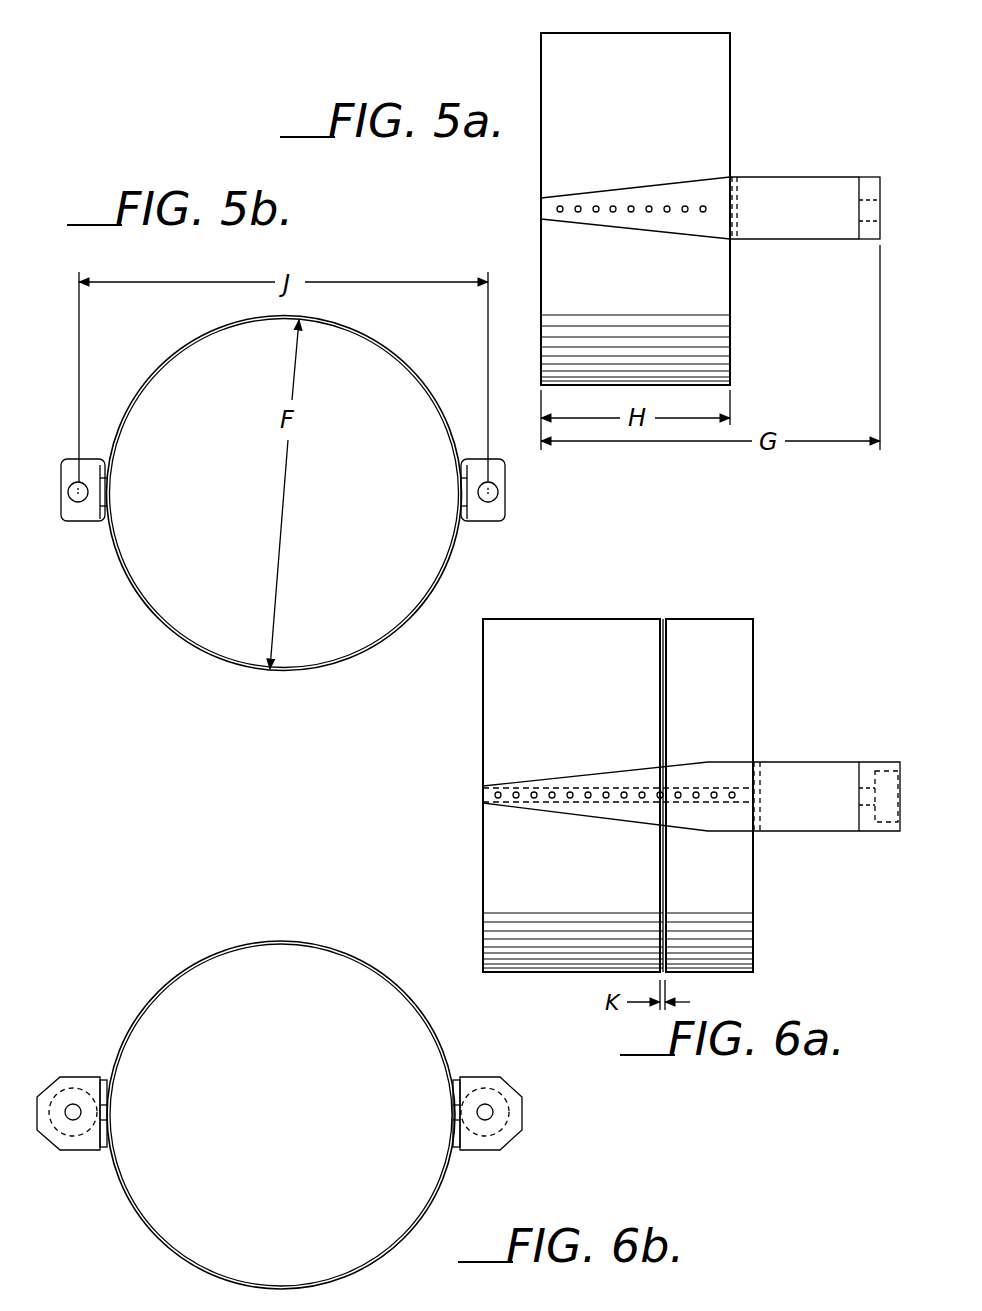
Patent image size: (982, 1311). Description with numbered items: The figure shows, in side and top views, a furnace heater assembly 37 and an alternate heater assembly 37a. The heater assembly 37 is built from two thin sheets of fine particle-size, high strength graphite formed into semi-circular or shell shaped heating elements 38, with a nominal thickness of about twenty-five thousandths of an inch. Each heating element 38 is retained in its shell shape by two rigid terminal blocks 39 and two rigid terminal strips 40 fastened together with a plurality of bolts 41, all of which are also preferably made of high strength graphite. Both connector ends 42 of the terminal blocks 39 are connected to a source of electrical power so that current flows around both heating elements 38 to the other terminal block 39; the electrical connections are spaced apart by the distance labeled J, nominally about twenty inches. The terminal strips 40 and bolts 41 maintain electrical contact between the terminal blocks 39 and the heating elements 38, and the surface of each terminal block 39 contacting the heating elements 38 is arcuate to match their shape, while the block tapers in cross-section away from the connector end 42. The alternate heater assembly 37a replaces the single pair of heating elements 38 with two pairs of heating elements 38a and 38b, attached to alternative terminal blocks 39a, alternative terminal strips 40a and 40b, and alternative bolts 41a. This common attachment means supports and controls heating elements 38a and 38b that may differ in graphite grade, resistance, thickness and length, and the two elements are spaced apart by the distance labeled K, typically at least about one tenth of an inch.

In FIG. 5A, the furnace heater assembly 37 is at (785, 115).
In FIG. 5A, the heating elements 38 is at (546, 72).
In FIG. 5B, the heating elements 38 is at (375, 338).
In FIG. 5A, the terminal blocks 39 is at (670, 184).
In FIG. 5B, the terminal blocks 39 is at (88, 522).
In FIG. 5B, the terminal strips 40 is at (112, 479).
In FIG. 5A, the bolts 41 is at (596, 206).
In FIG. 5A, the connector ends 42 is at (880, 186).
In FIG. 6A, the alternate heater assembly 37a is at (780, 622).
In FIG. 6A, the heating elements 38a is at (753, 676).
In FIG. 6A, the heating elements 38b is at (484, 737).
In FIG. 6B, the heating elements 38b is at (188, 966).
In FIG. 6A, the alternative terminal blocks 39a is at (808, 762).
In FIG. 6B, the alternative terminal blocks 39a is at (88, 1077).
In FIG. 6A, the alternative terminal strips 40a is at (668, 790).
In FIG. 6A, the alternative terminal strips 40b is at (612, 790).
In FIG. 6B, the alternative terminal strips 40b is at (112, 1100).
In FIG. 6A, the alternative bolts 41a is at (505, 786).